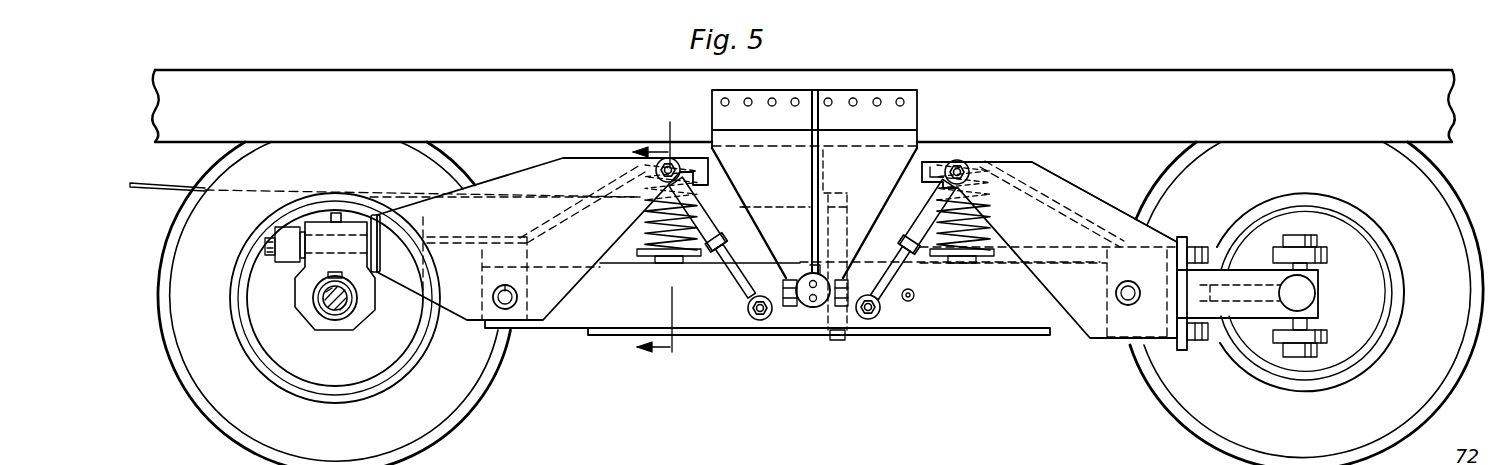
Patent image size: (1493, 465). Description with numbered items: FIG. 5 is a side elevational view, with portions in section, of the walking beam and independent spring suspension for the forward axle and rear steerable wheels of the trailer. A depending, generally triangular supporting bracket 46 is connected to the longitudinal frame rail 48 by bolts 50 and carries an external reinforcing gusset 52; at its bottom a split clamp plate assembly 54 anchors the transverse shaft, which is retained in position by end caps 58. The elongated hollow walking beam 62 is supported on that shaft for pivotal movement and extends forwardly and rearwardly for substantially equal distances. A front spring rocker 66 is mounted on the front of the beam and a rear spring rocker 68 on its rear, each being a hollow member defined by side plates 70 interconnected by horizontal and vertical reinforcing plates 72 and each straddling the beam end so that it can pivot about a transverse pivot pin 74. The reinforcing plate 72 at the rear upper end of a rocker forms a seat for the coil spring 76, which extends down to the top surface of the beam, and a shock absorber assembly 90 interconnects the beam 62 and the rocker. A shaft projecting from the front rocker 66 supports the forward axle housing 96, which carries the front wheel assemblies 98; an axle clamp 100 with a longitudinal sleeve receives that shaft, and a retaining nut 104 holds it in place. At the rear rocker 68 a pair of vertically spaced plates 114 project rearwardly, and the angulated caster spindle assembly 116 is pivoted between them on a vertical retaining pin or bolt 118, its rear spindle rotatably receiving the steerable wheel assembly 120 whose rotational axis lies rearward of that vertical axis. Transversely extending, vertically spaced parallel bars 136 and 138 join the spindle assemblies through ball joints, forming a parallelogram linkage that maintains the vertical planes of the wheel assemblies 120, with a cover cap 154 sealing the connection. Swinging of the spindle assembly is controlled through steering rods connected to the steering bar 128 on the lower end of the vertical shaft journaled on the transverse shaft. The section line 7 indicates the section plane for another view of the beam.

The longitudinal frame rails 48 is at (1207, 103).
The bolts 50 is at (876, 92).
The external reinforcing gusset 52 is at (818, 92).
The supporting brackets 46 is at (893, 165).
The reinforcing plates 72 is at (985, 158).
The side plates 70 is at (1043, 183).
The rear spring rocker 68 is at (1093, 197).
The front spring rocker 66 is at (538, 192).
The transverse pivot pin 74 is at (509, 304).
The coil spring 76 is at (653, 252).
The shock absorber assembly 90 is at (898, 275).
The split clamp plate assembly 54 is at (838, 308).
The end caps 58 is at (806, 303).
The steering bar 128 is at (813, 265).
The walking beam 62 is at (583, 313).
The section line 7- 7 is at (643, 233).
The wheel assemblies 98 is at (195, 345).
The axle clamp 100 is at (312, 283).
The retaining nut 104 is at (283, 262).
The forward axle housing 96 is at (337, 322).
The wheel assemblies 120 is at (1413, 183).
The retaining pin or bolt 118 is at (1178, 237).
The vertically spaced plates 114 is at (1193, 247).
The caster axle or spindle assembly 116 is at (1246, 313).
The transverse bar 136 is at (1325, 333).
The transverse bar 138 is at (1325, 255).
The cover cap 154 is at (1307, 357).